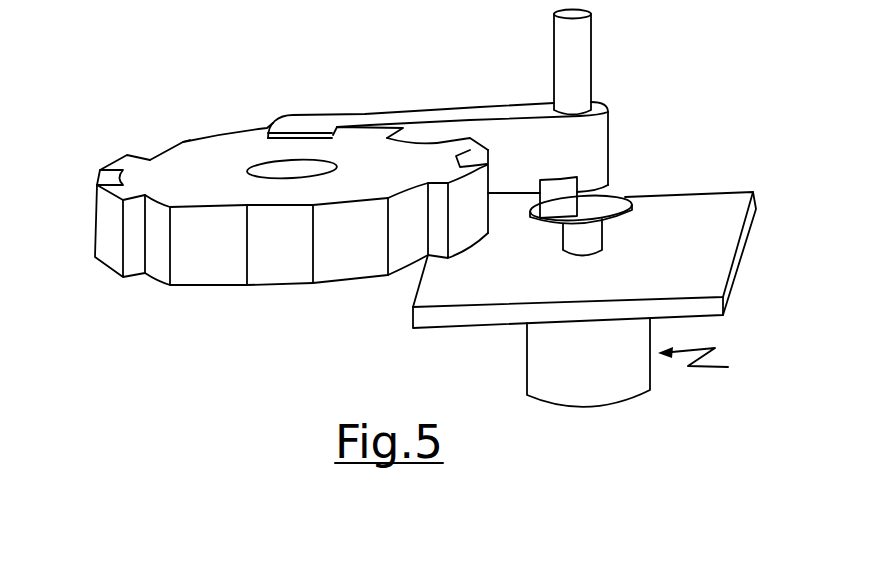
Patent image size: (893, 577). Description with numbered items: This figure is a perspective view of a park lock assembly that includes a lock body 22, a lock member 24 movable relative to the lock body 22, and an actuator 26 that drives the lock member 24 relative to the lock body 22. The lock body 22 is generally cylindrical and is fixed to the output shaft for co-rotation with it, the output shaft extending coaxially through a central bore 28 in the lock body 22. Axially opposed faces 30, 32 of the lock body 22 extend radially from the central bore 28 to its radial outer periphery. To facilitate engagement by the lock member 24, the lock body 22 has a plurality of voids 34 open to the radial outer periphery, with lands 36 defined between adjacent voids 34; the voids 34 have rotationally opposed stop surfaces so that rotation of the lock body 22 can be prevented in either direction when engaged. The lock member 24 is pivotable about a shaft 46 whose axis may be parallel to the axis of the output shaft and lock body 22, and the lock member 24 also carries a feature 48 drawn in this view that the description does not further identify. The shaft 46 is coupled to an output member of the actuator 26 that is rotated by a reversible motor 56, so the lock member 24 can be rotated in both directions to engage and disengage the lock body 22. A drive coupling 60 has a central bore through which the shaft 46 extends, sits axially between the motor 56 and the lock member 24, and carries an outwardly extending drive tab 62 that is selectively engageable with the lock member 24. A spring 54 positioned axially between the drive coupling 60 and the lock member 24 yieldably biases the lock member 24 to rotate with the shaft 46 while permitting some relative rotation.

The lock body 22 is at (276, 229).
The lock member 24 is at (438, 117).
The actuator 26 is at (706, 364).
The central bore 28 is at (283, 177).
The face 30 is at (200, 160).
The face 32 is at (218, 287).
The void 34 is at (150, 272).
The land 36 is at (190, 209).
The shaft 46 is at (580, 54).
The upper surface of arm 48 is at (313, 113).
The spring 54 is at (612, 192).
The motor 56 is at (588, 370).
The drive coupling 60 is at (630, 210).
The drive tab 62 is at (560, 202).